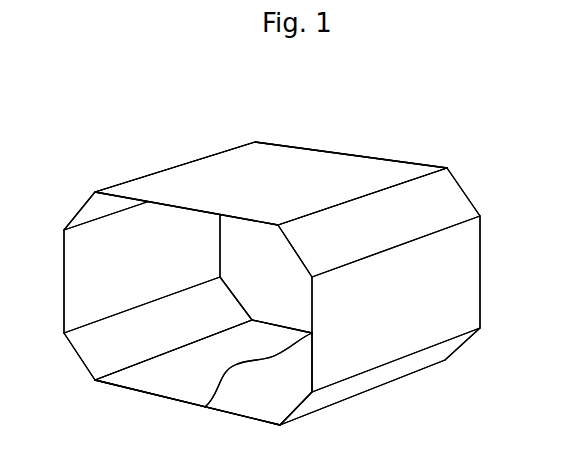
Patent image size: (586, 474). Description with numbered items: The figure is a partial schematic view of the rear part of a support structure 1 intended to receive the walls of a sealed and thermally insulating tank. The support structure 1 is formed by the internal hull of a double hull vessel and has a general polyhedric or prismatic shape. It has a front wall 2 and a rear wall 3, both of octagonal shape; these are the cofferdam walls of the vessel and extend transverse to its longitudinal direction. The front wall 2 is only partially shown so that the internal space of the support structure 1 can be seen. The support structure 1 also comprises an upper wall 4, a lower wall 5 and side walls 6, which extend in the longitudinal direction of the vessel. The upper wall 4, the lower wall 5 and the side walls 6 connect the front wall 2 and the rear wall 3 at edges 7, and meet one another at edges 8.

The support structure 1 is at (467, 197).
The front wall 2 is at (257, 393).
The rear wall 3 is at (255, 238).
The upper wall 4 is at (237, 162).
The lower wall 5 is at (163, 380).
The side walls 6 is at (80, 217).
The edges 7 is at (322, 150).
The edges 8 is at (128, 180).